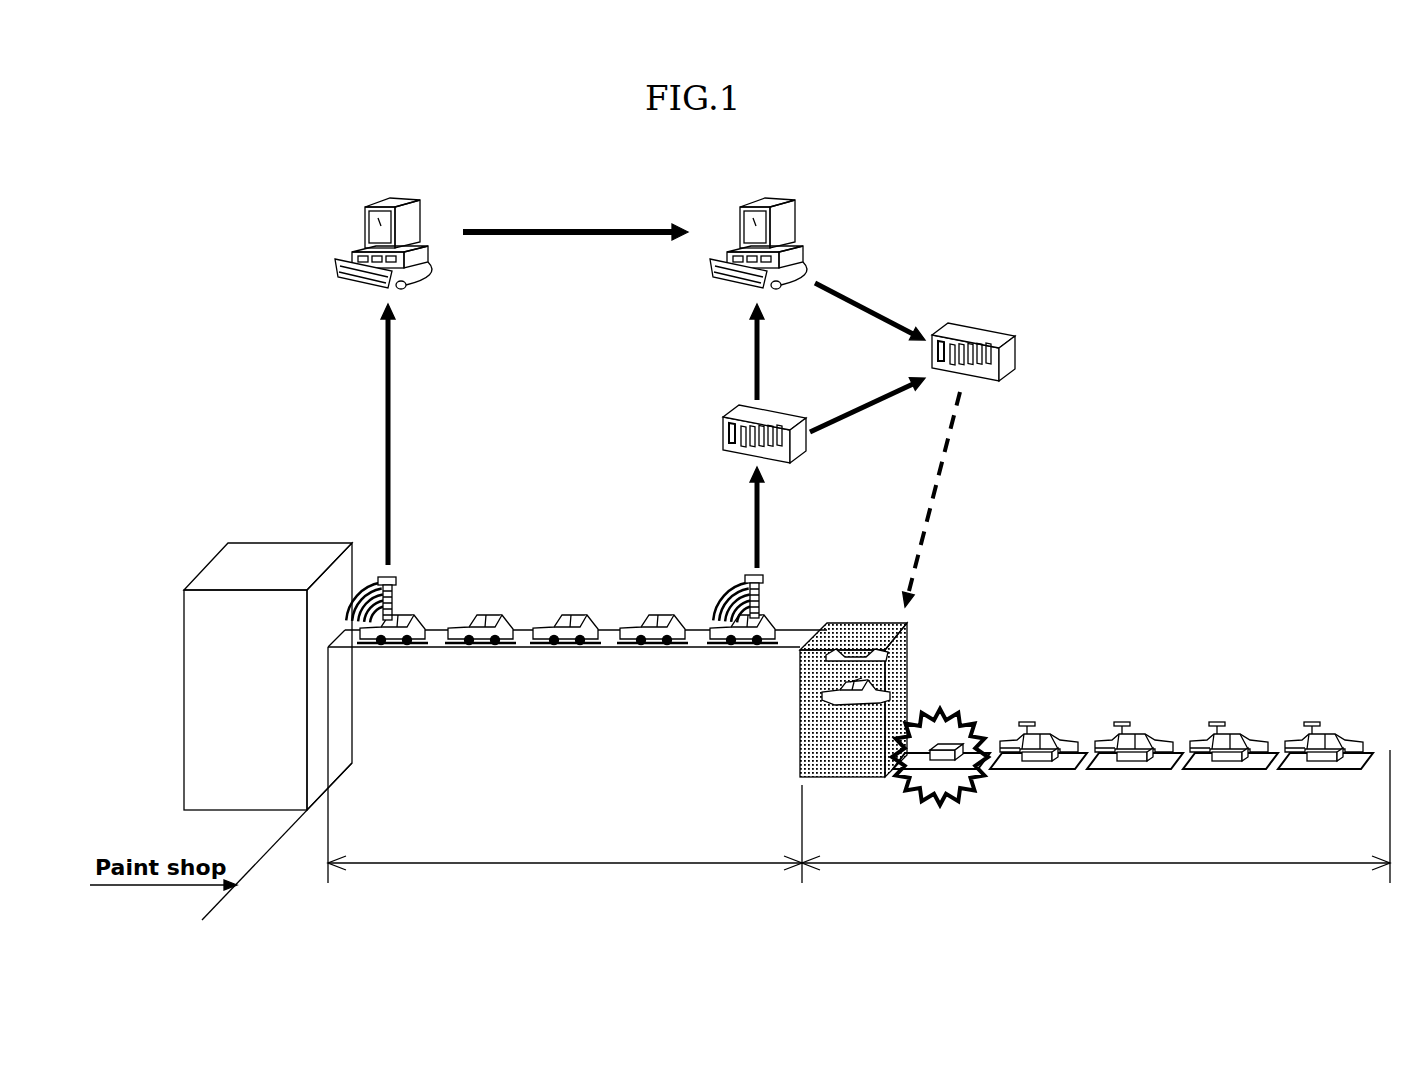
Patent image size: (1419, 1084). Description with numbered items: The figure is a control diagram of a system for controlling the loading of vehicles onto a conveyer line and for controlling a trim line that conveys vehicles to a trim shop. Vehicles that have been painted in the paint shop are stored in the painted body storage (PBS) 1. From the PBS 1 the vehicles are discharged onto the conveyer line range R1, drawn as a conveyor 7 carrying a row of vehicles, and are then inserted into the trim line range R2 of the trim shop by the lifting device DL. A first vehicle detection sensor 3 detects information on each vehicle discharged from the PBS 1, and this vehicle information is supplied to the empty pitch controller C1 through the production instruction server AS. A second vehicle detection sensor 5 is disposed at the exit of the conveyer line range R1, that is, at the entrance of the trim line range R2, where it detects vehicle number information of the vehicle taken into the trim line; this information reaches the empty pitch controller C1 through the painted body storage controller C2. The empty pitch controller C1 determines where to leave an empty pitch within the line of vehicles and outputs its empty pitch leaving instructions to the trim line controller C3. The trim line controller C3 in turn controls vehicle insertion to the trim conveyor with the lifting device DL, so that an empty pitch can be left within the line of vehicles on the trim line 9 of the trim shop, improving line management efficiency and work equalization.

The painted body storage (PBS) 1 is at (196, 701).
The first vehicle detection sensor 3 is at (397, 586).
The second vehicle detection sensor 5 is at (763, 584).
The conveyor line R1 7 is at (527, 648).
The trim line 9 is at (1175, 750).
The production instruction server AS is at (357, 225).
The empty pitch controller C1 is at (800, 226).
The painted body storage (PBS) controller C2 is at (722, 435).
The trim line controller C3 is at (1016, 357).
The lifting device DL is at (844, 771).
The conveyer line range R1 is at (565, 765).
The trim line range R2 is at (1096, 816).